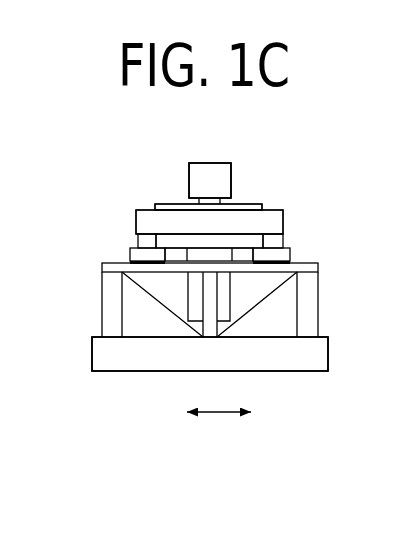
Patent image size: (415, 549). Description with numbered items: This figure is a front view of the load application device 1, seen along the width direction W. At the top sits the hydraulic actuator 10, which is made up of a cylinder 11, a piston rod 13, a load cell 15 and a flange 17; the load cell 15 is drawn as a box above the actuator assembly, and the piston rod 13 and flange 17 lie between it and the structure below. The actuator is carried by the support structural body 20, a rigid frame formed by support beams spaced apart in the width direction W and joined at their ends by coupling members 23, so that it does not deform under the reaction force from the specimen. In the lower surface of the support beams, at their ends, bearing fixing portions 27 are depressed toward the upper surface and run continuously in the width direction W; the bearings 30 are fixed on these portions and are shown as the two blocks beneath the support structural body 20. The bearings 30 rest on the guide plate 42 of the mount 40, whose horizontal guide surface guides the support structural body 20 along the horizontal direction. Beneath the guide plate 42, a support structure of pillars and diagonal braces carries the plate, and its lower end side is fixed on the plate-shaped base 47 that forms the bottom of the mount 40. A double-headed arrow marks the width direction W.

The load application device 1 is at (139, 147).
The hydraulic actuator 10 is at (213, 153).
The load cell 15 is at (233, 172).
The piston rod 13 is at (190, 204).
The flange 17 is at (248, 204).
The support structural body 20 is at (283, 200).
The coupling member 23 is at (284, 216).
The bearing fixing portion 27 is at (182, 235).
The bearing 30 is at (134, 247).
The guide plate 42 is at (102, 265).
The cylinder 11 is at (230, 298).
The mount 40 is at (81, 356).
The base 47 is at (278, 371).
The width direction W is at (219, 413).